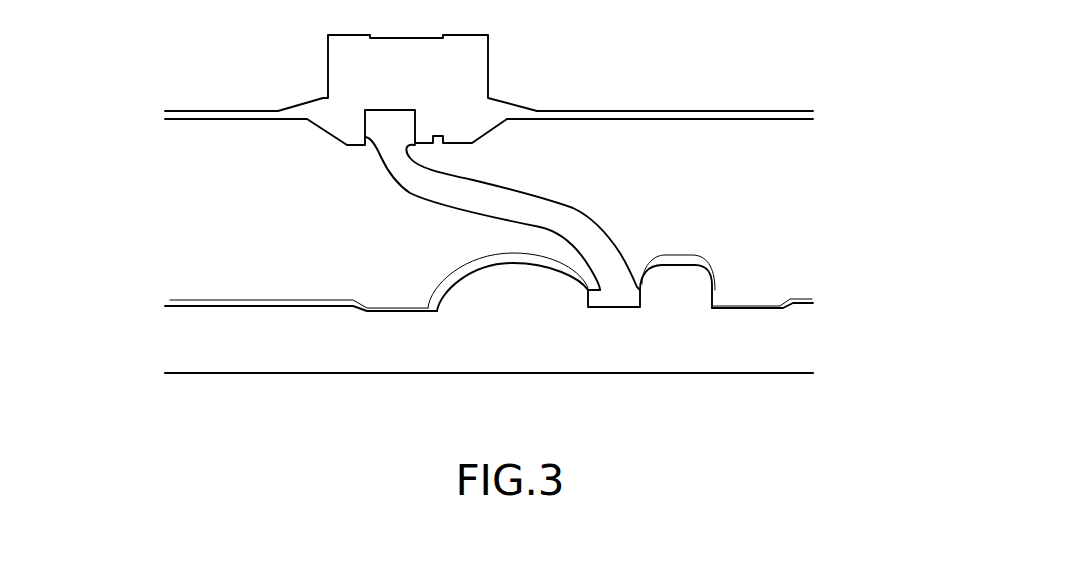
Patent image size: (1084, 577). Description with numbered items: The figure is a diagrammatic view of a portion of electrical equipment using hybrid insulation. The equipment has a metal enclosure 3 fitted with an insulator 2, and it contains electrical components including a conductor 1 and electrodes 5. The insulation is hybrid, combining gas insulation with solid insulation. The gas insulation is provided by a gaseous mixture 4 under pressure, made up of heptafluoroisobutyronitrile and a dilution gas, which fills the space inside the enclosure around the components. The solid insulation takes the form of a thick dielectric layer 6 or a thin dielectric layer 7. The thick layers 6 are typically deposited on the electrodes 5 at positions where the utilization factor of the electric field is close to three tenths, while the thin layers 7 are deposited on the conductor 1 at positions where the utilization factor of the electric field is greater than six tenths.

The conductor 1 is at (280, 352).
The insulator 2 is at (557, 213).
The metal enclosure 3 is at (325, 115).
The gaseous mixture 4 is at (750, 150).
The electrodes 5 is at (510, 292).
The thick dielectric layer 6 is at (460, 267).
The thin dielectric layer 7 is at (215, 303).